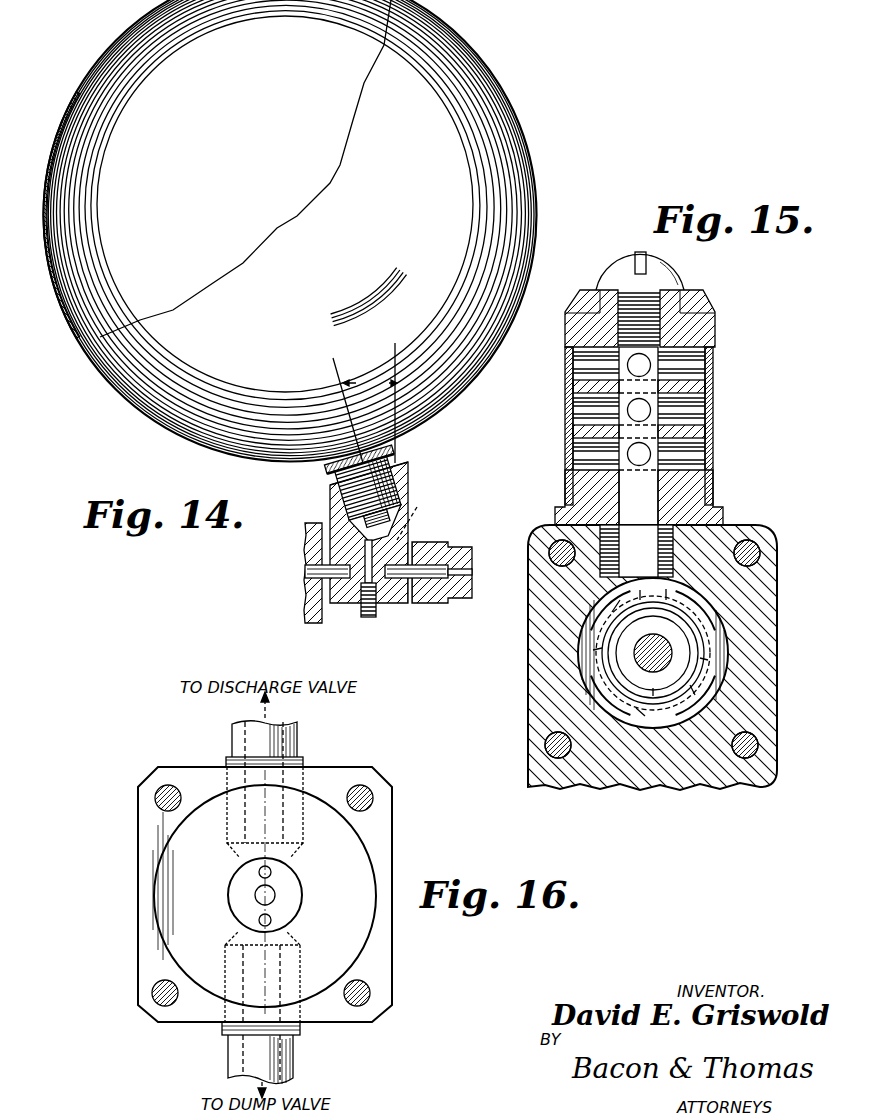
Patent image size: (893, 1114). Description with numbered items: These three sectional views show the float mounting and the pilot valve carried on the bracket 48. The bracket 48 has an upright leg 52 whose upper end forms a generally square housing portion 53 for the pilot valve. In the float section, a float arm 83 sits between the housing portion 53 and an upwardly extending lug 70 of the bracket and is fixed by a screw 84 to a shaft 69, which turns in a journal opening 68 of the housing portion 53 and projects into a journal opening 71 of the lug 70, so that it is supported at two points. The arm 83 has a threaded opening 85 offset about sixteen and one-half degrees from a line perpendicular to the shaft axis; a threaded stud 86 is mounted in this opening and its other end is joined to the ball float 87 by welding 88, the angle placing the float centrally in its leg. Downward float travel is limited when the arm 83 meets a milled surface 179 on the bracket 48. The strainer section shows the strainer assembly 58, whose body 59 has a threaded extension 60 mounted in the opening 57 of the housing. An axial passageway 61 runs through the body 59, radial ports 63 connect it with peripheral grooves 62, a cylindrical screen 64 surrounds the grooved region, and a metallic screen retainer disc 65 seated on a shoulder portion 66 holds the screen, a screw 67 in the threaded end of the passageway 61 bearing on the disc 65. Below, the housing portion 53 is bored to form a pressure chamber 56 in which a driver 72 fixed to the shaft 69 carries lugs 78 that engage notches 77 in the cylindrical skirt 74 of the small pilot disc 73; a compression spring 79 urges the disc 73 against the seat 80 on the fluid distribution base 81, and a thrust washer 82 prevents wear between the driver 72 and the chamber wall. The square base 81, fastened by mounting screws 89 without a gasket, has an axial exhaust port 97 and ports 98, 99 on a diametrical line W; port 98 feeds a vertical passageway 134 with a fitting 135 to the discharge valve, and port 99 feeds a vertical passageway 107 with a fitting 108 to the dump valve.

In FIG. 14, the ball float 87 is at (511, 119).
In FIG. 14, the threaded stud 86 is at (393, 456).
In FIG. 14, the welding 88 is at (325, 472).
In FIG. 14, the threaded opening 85 is at (401, 490).
In FIG. 14, the bracket 48 is at (316, 525).
In FIG. 14, the milled surface 179 is at (417, 507).
In FIG. 14, the lug 70 is at (426, 542).
In FIG. 14, the journal opening 68 is at (307, 565).
In FIG. 14, the shaft 69 is at (305, 576).
In FIG. 15, the shaft 69 is at (655, 641).
In FIG. 14, the journal opening 71 is at (473, 574).
In FIG. 14, the housing portion 53 is at (305, 614).
In FIG. 15, the housing portion 53 is at (777, 640).
In FIG. 14, the screw 84 is at (367, 618).
In FIG. 14, the float arm 83 is at (390, 603).
In FIG. 14, the upright leg 52 is at (440, 603).
In FIG. 15, the upright leg 52 is at (654, 788).
In FIG. 15, the screw 67 is at (620, 262).
In FIG. 15, the shoulder portion 66 is at (571, 309).
In FIG. 15, the screen retainer disc 65 is at (708, 302).
In FIG. 15, the grooves 62 is at (706, 368).
In FIG. 15, the radial ports 63 is at (626, 372).
In FIG. 15, the strainer assembly 58 is at (560, 414).
In FIG. 15, the cylindrical screen 64 is at (563, 456).
In FIG. 15, the body 59 is at (556, 517).
In FIG. 15, the axial passageway 61 is at (659, 503).
In FIG. 15, the opening 57 is at (690, 540).
In FIG. 15, the threaded extension 60 is at (664, 560).
In FIG. 15, the mounting screws 89 is at (549, 553).
In FIG. 16, the mounting screws 89 is at (155, 798).
In FIG. 15, the pressure chamber 56 is at (580, 657).
In FIG. 15, the pilot disc 73 is at (672, 600).
In FIG. 15, the notches 77 is at (650, 655).
In FIG. 15, the lugs 78 is at (612, 625).
In FIG. 15, the driver 72 is at (618, 678).
In FIG. 15, the compression spring 79 is at (643, 662).
In FIG. 15, the thrust washer 82 is at (656, 699).
In FIG. 15, the cylindrical skirt 74 is at (701, 698).
In FIG. 16, the fitting 135 is at (298, 740).
In FIG. 16, the fluid distribution base 81 is at (393, 833).
In FIG. 16, the vertical passageway 134 is at (300, 848).
In FIG. 16, the port 98 is at (258, 874).
In FIG. 16, the axial exhaust port 97 is at (272, 893).
In FIG. 16, the port 99 is at (258, 918).
In FIG. 16, the seat 80 is at (300, 908).
In FIG. 16, the vertical passageway 107 is at (300, 935).
In FIG. 16, the diametrical line W is at (283, 972).
In FIG. 16, the fitting 108 is at (228, 1050).